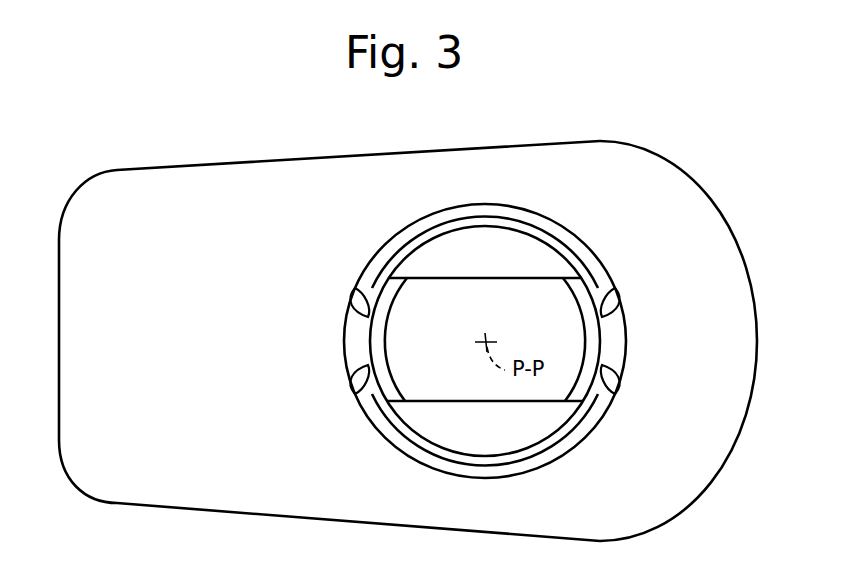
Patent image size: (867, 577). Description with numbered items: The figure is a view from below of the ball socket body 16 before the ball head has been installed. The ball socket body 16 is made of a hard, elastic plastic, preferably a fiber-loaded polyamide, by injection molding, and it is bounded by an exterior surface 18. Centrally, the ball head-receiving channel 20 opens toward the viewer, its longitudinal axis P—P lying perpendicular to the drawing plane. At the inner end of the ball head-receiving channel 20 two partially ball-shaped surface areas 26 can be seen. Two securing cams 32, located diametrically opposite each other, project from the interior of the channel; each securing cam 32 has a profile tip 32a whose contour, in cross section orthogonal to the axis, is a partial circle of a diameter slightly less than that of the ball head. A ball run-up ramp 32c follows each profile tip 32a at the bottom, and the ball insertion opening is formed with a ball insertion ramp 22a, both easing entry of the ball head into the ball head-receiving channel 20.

The ball socket body 16 is at (740, 347).
The exterior surface 18 is at (747, 417).
The ball head-receiving channel 20 is at (455, 422).
The ball insertion ramp 22a is at (615, 330).
The partially ball-shaped surface areas 26 is at (440, 258).
The securing cams 32 is at (383, 373).
The profile tip 32a is at (583, 333).
The ball run-up ramp 32c is at (587, 293).